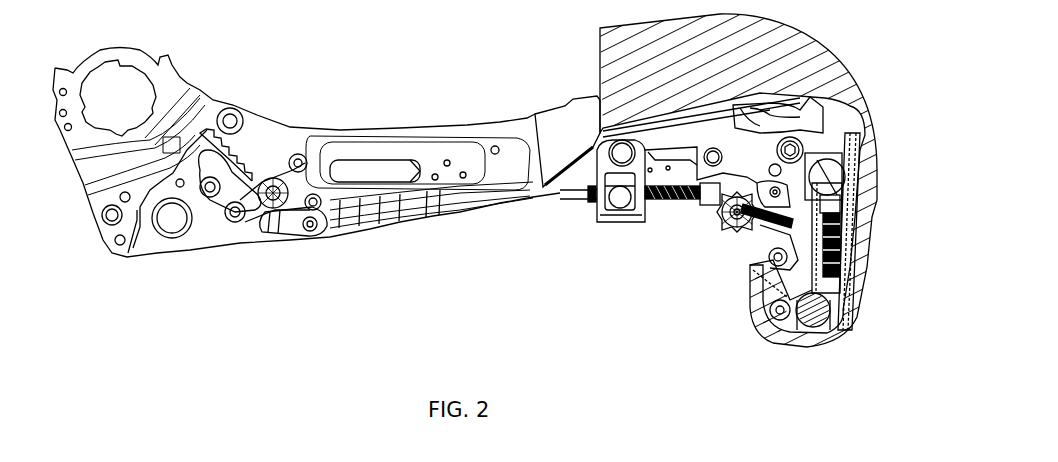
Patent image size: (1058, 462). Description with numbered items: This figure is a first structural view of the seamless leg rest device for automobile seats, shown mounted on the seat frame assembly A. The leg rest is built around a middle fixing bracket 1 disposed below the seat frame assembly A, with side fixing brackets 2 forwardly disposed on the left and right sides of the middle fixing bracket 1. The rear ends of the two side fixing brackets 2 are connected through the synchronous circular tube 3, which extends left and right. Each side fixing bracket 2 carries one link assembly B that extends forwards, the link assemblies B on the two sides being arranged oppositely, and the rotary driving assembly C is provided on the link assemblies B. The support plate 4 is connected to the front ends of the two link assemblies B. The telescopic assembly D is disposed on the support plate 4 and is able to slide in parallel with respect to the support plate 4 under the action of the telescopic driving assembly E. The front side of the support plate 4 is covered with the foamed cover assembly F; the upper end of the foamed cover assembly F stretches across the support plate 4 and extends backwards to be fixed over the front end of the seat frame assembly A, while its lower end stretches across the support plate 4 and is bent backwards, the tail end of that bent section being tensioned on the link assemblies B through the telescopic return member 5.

The seat frame assembly A is at (267, 130).
The foamed cover assembly F is at (610, 48).
The middle fixing bracket 1 is at (643, 197).
The side fixing brackets 2 is at (757, 155).
The synchronous circular tube 3 is at (703, 128).
The support plate 4 is at (863, 152).
The telescopic return member 5 is at (750, 272).
The link assemblies B is at (785, 240).
The rotary driving assembly C is at (717, 225).
The telescopic assembly D is at (847, 293).
The telescopic driving assembly E is at (840, 257).